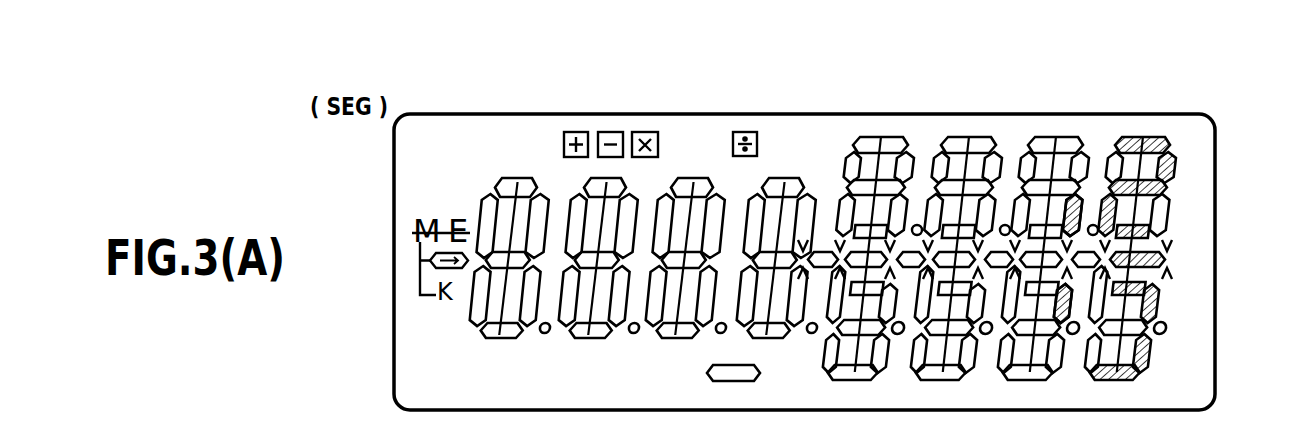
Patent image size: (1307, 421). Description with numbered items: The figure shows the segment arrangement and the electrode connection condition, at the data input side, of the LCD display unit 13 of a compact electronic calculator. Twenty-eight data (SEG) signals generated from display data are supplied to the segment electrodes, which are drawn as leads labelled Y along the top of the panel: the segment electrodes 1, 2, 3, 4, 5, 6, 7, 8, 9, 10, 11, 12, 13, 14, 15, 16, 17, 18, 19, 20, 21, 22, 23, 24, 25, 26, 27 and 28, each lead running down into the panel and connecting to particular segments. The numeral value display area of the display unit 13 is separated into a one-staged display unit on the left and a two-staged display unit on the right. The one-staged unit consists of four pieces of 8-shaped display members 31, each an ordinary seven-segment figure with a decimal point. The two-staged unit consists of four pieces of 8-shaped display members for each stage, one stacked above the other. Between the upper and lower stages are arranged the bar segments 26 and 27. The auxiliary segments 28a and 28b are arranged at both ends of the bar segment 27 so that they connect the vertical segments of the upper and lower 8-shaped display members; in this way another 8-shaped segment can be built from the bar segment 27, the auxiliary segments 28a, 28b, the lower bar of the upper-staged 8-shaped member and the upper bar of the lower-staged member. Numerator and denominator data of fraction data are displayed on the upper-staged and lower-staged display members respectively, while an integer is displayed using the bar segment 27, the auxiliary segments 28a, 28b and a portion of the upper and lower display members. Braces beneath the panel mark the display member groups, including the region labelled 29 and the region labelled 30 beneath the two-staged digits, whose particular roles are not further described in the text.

The segment electrode Y1 1 is at (415, 218).
The segment electrode Y2 2 is at (490, 194).
The segment electrode Y3 3 is at (517, 180).
The segment electrode Y4 4 is at (540, 194).
The segment electrode Y5 5 is at (579, 194).
The segment electrode Y6 6 is at (606, 180).
The segment electrode Y7 7 is at (630, 194).
The segment electrode Y8 8 is at (666, 194).
The segment electrode Y9 9 is at (693, 180).
The segment electrode Y10 10 is at (716, 194).
The segment electrode Y11 11 is at (757, 194).
The segment electrode Y12 12 is at (784, 180).
The LCD display unit 13 is at (406, 330).
The segment electrode Y14 14 is at (854, 152).
The segment electrode Y15 15 is at (880, 137).
The segment electrode Y16 16 is at (907, 152).
The segment electrode Y17 17 is at (918, 225).
The segment electrode Y18 18 is at (942, 152).
The segment electrode Y19 19 is at (968, 137).
The segment electrode Y20 20 is at (995, 152).
The segment electrode Y21 21 is at (1006, 225).
The segment electrode Y22 22 is at (1029, 152).
The segment electrode Y23 23 is at (1055, 137).
The segment electrode Y24 24 is at (1082, 152).
The segment electrode Y25 25 is at (1094, 225).
The bar segment 26 is at (812, 258).
The bar segment 27 is at (1183, 45).
The segment electrode Y28 28 is at (1169, 152).
The auxiliary segment 28a is at (1168, 249).
The auxiliary segment 28b is at (1168, 271).
The digit display unit 29 is at (910, 380).
The lower digit segment group 30 is at (1047, 279).
The 8-shaped display member 31 is at (555, 343).